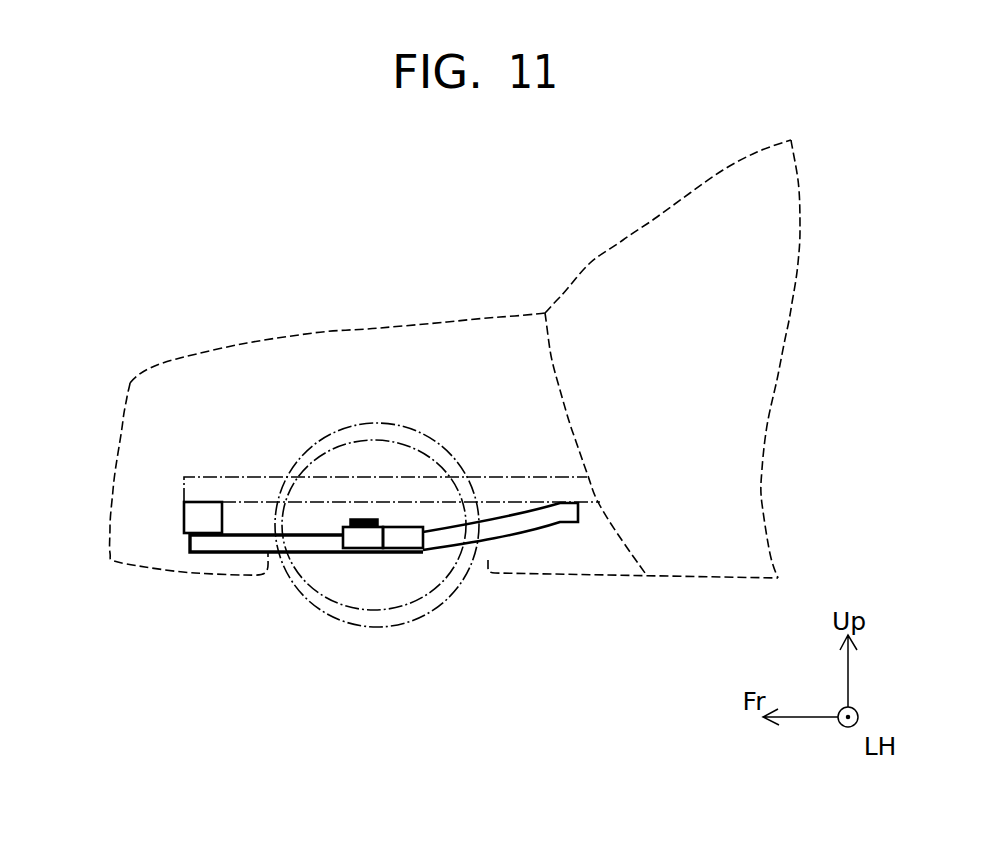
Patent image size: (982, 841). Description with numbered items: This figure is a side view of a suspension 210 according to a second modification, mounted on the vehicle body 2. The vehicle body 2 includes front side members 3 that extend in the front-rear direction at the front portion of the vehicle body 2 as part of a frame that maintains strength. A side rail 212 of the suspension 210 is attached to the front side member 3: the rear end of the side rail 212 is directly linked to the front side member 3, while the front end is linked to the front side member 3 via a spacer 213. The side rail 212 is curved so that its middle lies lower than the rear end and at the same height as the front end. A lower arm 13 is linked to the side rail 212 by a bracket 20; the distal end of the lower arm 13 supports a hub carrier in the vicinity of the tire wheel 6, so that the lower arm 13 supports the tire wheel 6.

The vehicle body 2 is at (493, 320).
The front side member 3 is at (186, 490).
The tire wheel 6 is at (423, 600).
The lower arm 13 is at (357, 543).
The bracket 20 is at (363, 520).
The suspension 210 is at (531, 540).
The side rail 212 is at (242, 553).
The spacer 213 is at (184, 522).